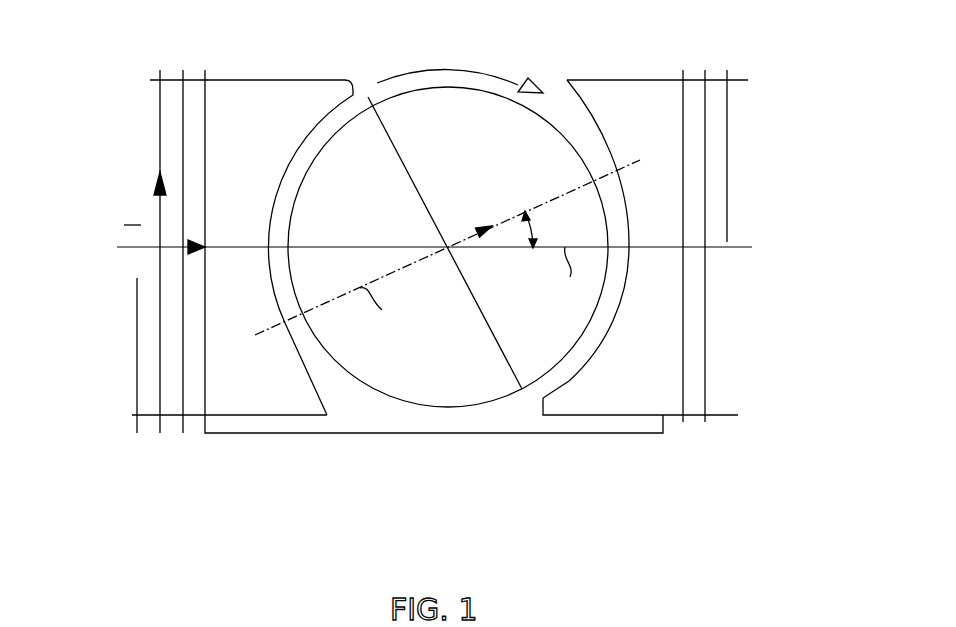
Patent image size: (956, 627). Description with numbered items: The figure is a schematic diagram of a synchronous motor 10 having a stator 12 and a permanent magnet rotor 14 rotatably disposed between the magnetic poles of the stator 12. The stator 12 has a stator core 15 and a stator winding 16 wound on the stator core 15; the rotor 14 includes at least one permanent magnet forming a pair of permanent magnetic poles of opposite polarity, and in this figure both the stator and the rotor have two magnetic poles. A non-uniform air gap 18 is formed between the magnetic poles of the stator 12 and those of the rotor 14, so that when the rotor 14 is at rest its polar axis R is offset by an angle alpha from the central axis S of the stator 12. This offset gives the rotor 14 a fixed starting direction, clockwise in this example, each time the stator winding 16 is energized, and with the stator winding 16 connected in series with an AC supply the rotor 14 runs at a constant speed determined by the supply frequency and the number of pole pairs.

The synchronous motor 10 is at (313, 53).
The stator 12 is at (215, 80).
The permanent magnet rotor 14 is at (368, 97).
The stator core 15 is at (248, 385).
The stator winding 16 is at (158, 128).
The non-uniform air gap 18 is at (574, 102).